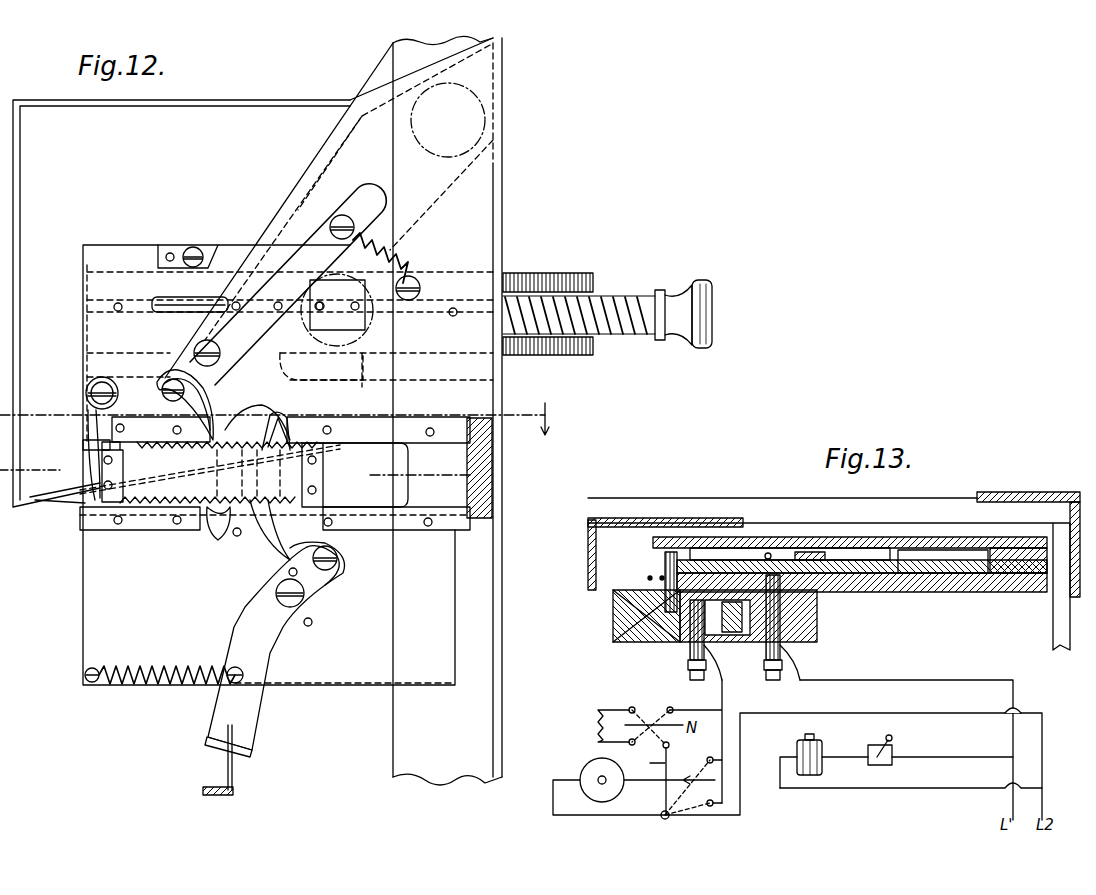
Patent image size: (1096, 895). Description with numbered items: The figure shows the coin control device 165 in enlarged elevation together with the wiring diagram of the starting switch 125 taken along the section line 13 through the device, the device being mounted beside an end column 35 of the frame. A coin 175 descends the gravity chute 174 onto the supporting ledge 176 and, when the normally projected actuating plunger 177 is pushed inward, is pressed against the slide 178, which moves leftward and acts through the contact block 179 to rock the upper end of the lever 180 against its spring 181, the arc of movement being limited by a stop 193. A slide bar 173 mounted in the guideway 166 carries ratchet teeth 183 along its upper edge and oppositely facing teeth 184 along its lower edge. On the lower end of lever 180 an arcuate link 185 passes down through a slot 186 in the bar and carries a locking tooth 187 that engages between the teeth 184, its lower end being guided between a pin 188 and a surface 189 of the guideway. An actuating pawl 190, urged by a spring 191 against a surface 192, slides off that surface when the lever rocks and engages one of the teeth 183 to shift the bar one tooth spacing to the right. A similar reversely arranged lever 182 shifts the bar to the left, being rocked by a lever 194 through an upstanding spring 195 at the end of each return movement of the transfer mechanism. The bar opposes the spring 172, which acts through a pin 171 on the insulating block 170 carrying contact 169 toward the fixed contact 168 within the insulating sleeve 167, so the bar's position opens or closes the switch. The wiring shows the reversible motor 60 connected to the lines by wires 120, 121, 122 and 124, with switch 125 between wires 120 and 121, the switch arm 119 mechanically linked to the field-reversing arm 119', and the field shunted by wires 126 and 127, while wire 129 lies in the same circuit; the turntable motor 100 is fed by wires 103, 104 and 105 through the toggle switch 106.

In FIG. 12, the turntable 13 is at (284, 419).
In FIG. 12, the end column 35 is at (482, 575).
In FIG. 13, the end column 35 is at (1018, 492).
In FIG. 13, the reversible motor 60 is at (595, 766).
In FIG. 13, the motor 100 is at (800, 778).
In FIG. 13, the wire 103 is at (940, 757).
In FIG. 13, the wire 104 is at (846, 756).
In FIG. 13, the wire 105 is at (930, 790).
In FIG. 13, the toggle type switch 106 is at (893, 748).
In FIG. 13, the switch arm 119 is at (685, 811).
In FIG. 13, the field-reversing arm 119' is at (634, 711).
In FIG. 13, the wire 120 is at (962, 680).
In FIG. 13, the wire 121 is at (722, 690).
In FIG. 13, the wire 122 is at (702, 747).
In FIG. 13, the wire 124 is at (740, 713).
In FIG. 13, the starting switch 125 is at (748, 655).
In FIG. 13, the wire 126 is at (686, 740).
In FIG. 13, the wire 127 is at (645, 763).
In FIG. 13, the contact 129 is at (693, 781).
In FIG. 12, the coin control device 165 is at (513, 225).
In FIG. 12, the guideway 166 is at (415, 530).
In FIG. 13, the guideway 166 is at (980, 580).
In FIG. 13, the insulating sleeve 167 is at (630, 642).
In FIG. 13, the switch contact 168 is at (812, 632).
In FIG. 13, the switch contact 169 is at (690, 625).
In FIG. 13, the insulating block 170 is at (613, 628).
In FIG. 12, the pin 171 is at (77, 500).
In FIG. 13, the pin 171 is at (665, 560).
In FIG. 12, the spring 172 is at (94, 452).
In FIG. 13, the spring 172 is at (648, 578).
In FIG. 12, the slide bar 173 is at (163, 490).
In FIG. 13, the slide bar 173 is at (870, 546).
In FIG. 12, the gravity chute 174 is at (420, 202).
In FIG. 12, the coin 175 is at (420, 143).
In FIG. 12, the supporting ledge 176 is at (363, 387).
In FIG. 12, the actuating plunger 177 is at (560, 273).
In FIG. 12, the slide 178 is at (100, 300).
In FIG. 12, the contact block 179 is at (308, 316).
In FIG. 12, the lever 180 is at (284, 262).
In FIG. 12, the spring 181 is at (400, 262).
In FIG. 12, the lever 182 is at (268, 652).
In FIG. 12, the ratchet teeth 183 is at (147, 445).
In FIG. 12, the teeth 184 is at (190, 505).
In FIG. 12, the arcuate link 185 is at (300, 407).
In FIG. 13, the arcuate link 185 is at (822, 560).
In FIG. 13, the slot 186 is at (776, 556).
In FIG. 12, the locking tooth 187 is at (218, 540).
In FIG. 12, the pin 188 is at (238, 535).
In FIG. 12, the surface 189 is at (203, 520).
In FIG. 12, the actuating pawl 190 is at (205, 407).
In FIG. 12, the spring 191 is at (220, 405).
In FIG. 12, the surface 192 is at (118, 393).
In FIG. 12, the stop 193 is at (205, 245).
In FIG. 12, the lever 194 is at (205, 792).
In FIG. 12, the spring 195 is at (228, 752).